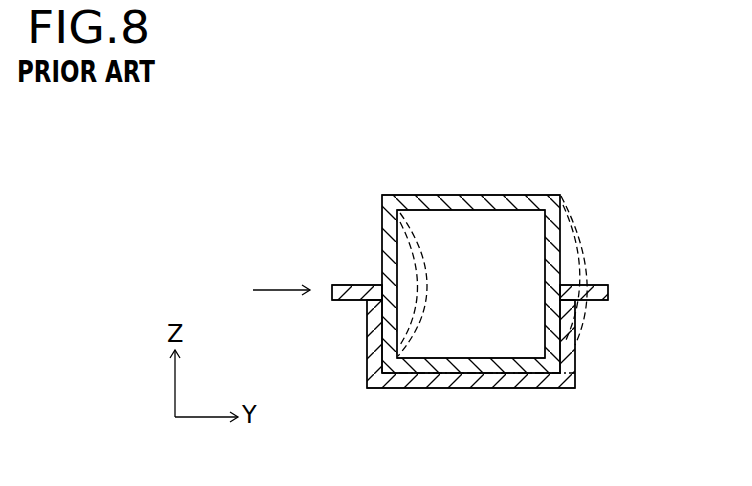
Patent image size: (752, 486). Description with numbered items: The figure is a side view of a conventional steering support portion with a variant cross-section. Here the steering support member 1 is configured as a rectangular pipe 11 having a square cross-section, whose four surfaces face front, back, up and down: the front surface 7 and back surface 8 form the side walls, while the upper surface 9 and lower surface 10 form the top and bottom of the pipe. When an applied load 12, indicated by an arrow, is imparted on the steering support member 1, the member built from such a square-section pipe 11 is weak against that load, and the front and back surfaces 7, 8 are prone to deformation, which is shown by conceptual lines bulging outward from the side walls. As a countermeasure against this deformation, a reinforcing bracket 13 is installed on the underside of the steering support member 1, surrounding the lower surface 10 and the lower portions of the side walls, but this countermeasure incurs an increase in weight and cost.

The steering support member 1 is at (468, 187).
The rectangular pipe 11 is at (479, 289).
The front surface 7 is at (415, 263).
The back surface 8 is at (567, 225).
The upper surface 9 is at (423, 195).
The lower surface 10 is at (440, 374).
The applied load 12 is at (277, 289).
The reinforcing bracket 13 is at (497, 385).